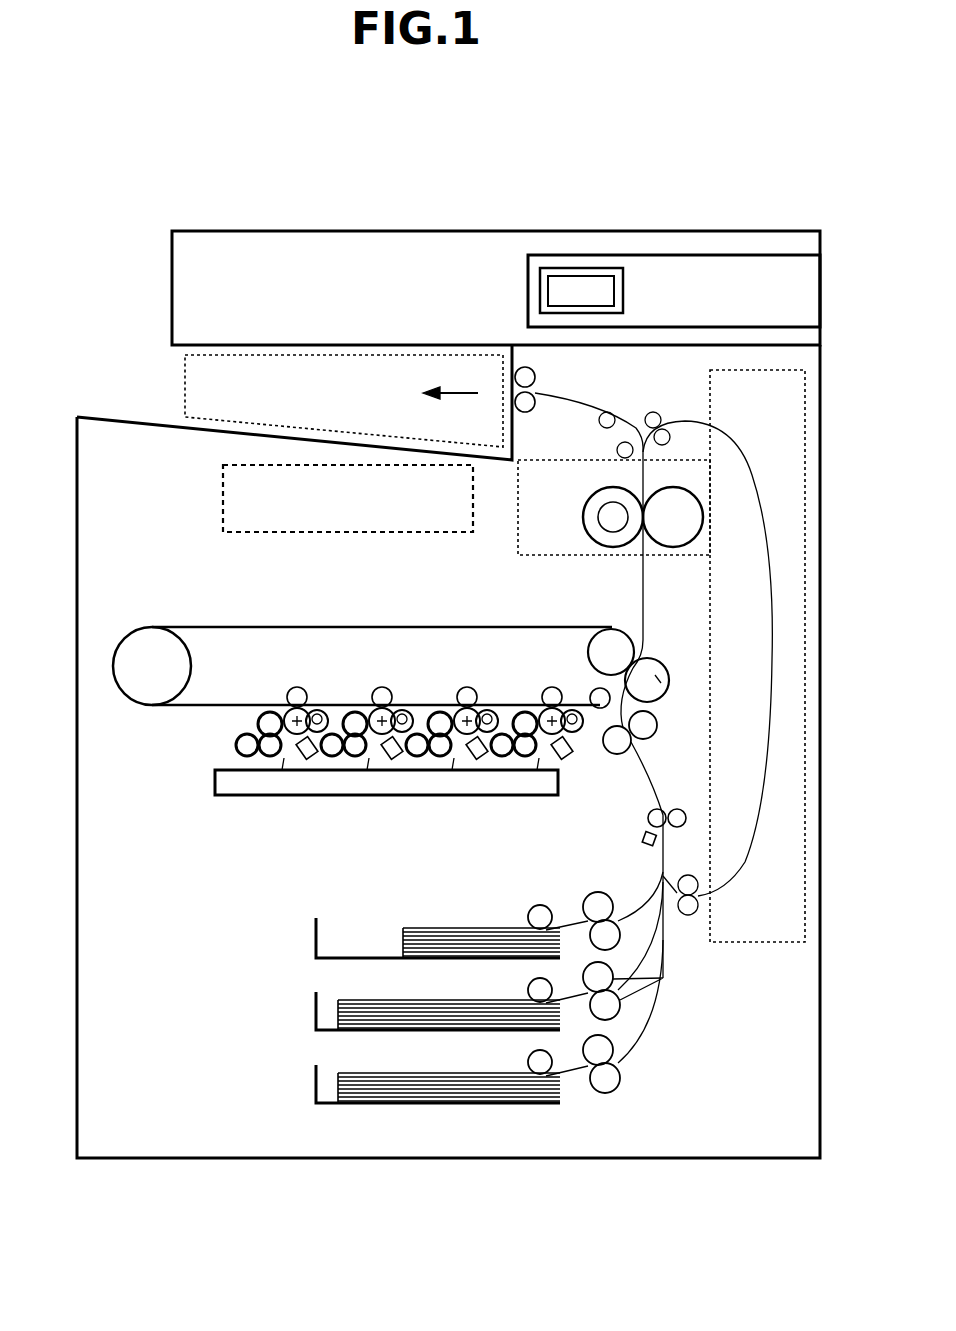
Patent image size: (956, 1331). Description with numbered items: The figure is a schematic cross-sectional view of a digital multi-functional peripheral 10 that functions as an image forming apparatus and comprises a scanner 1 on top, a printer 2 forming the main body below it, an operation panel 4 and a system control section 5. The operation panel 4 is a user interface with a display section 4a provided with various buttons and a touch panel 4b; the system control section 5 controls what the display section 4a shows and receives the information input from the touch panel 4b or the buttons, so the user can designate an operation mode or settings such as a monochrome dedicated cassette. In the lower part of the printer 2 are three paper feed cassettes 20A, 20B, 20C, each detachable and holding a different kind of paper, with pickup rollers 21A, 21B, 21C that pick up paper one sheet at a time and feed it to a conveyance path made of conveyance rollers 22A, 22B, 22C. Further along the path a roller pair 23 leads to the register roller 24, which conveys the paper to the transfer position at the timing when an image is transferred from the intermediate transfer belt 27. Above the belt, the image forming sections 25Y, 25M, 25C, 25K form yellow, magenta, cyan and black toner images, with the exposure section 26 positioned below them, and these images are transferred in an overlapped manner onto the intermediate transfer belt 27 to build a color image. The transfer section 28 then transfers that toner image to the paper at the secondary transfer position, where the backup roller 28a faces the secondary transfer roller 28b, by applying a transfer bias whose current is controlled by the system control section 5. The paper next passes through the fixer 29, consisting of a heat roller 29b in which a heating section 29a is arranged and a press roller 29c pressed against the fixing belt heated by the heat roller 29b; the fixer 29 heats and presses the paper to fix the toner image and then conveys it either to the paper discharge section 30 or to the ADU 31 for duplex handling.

The digital multi-functional peripheral 10 is at (557, 200).
The scanner 1 is at (172, 290).
The printer 2 is at (77, 561).
The operation panel 4 is at (822, 291).
The display section 4a is at (540, 304).
The touch panel 4b is at (540, 278).
The system control section 5 is at (223, 492).
The paper discharge section 30 is at (185, 383).
The ADU 31 is at (807, 450).
The fixer 29 is at (540, 558).
The heating section 29a is at (612, 513).
The heat roller 29b is at (608, 543).
The press roller 29c is at (676, 548).
The intermediate transfer belt 27 is at (418, 627).
The transfer section 28 is at (652, 662).
The backup roller 28a is at (618, 640).
The secondary transfer roller 28b is at (658, 724).
The register roller 24 is at (608, 756).
The conveyance roller 23 is at (646, 836).
The image forming section 25Y is at (302, 692).
The image forming section 25M is at (387, 692).
The image forming section 25C is at (472, 692).
The image forming section 25K is at (557, 692).
The exposure section 26 is at (262, 796).
The paper feed cassette 20A is at (316, 938).
The paper feed cassette 20B is at (316, 1010).
The paper feed cassette 20C is at (316, 1083).
The pickup roller 21A is at (528, 911).
The pickup roller 21B is at (528, 984).
The pickup roller 21C is at (528, 1056).
The conveyance roller 22A is at (608, 892).
The conveyance roller 22B is at (665, 978).
The conveyance roller 22C is at (620, 1054).